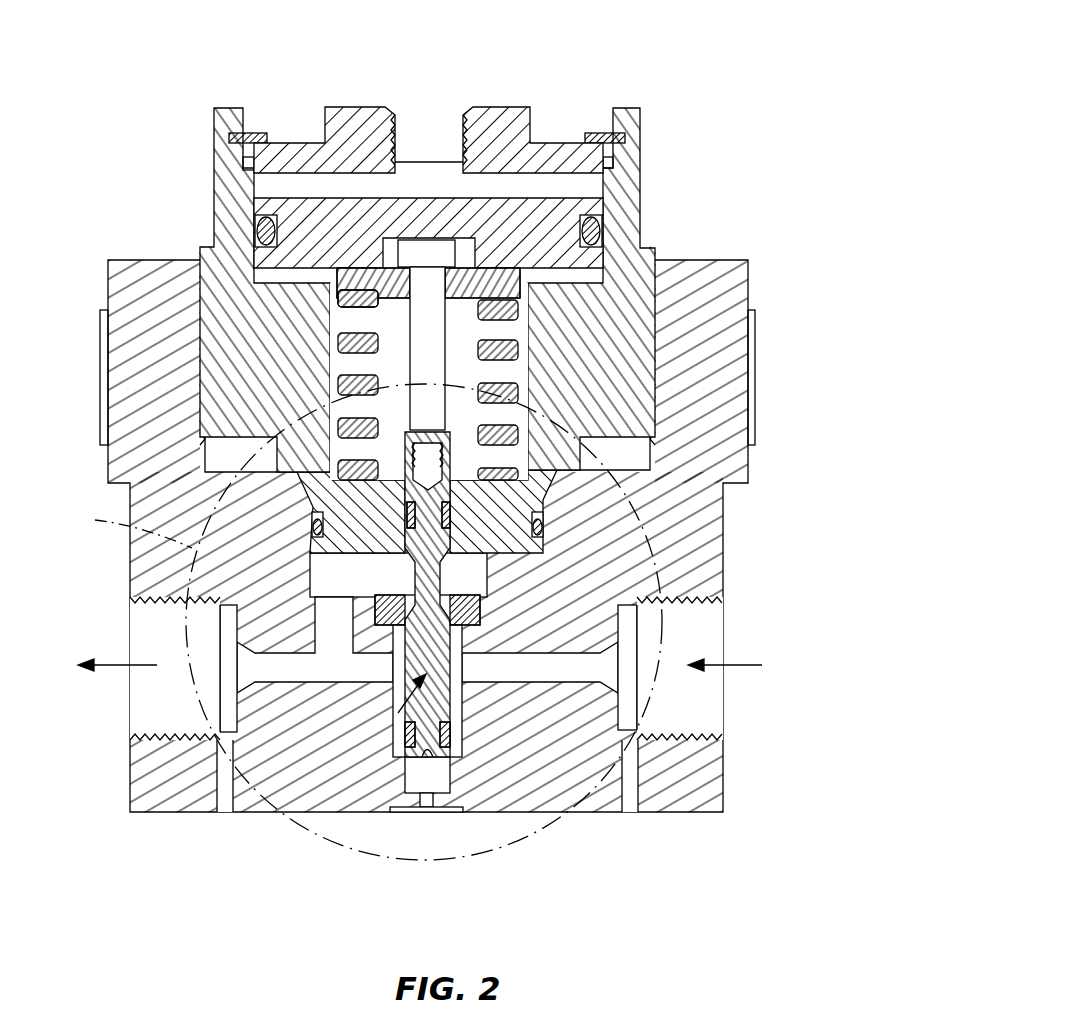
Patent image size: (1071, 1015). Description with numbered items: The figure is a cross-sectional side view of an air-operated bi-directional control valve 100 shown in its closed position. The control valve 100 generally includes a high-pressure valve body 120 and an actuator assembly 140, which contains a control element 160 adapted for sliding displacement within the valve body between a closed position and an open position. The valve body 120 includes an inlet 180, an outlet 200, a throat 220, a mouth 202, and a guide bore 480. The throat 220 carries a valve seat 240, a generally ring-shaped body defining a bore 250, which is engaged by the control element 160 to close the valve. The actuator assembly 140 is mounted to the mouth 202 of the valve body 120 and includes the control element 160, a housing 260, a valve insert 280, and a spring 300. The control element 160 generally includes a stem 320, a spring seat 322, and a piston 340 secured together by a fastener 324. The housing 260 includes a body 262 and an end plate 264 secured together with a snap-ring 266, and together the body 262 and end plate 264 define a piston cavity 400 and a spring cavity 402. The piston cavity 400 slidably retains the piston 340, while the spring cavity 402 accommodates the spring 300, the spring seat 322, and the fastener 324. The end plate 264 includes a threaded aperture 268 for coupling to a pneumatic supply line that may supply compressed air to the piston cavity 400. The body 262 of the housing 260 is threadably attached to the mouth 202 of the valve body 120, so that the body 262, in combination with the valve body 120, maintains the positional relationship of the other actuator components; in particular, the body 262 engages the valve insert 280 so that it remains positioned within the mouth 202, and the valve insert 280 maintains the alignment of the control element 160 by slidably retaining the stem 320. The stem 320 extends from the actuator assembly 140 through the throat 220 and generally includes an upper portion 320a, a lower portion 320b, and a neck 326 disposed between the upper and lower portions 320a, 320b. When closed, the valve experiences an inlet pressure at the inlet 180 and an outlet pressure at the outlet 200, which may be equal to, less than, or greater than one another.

The control valve 100 is at (437, 459).
The valve body 120 is at (760, 306).
The actuator assembly 140 is at (437, 260).
The control element 160 is at (392, 328).
The inlet 180 is at (707, 712).
The outlet 200 is at (152, 709).
The mouth 202 is at (652, 345).
The throat 220 is at (452, 627).
The valve seat 240 is at (380, 622).
The bore 250 is at (427, 500).
The housing 260 is at (475, 262).
The body 262 is at (627, 183).
The end plate 264 is at (503, 120).
The snap-ring 266 is at (246, 130).
The threaded aperture 268 is at (440, 130).
The valve insert 280 is at (470, 548).
The spring 300 is at (432, 372).
The stem 320 is at (556, 670).
The upper portion 320a is at (432, 535).
The lower portion 320b is at (405, 660).
The spring seat 322 is at (490, 285).
The fastener 324 is at (422, 370).
The neck 326 is at (455, 575).
The piston 340 is at (343, 210).
The piston cavity 400 is at (290, 185).
The spring cavity 402 is at (350, 360).
The guide bore 480 is at (412, 750).